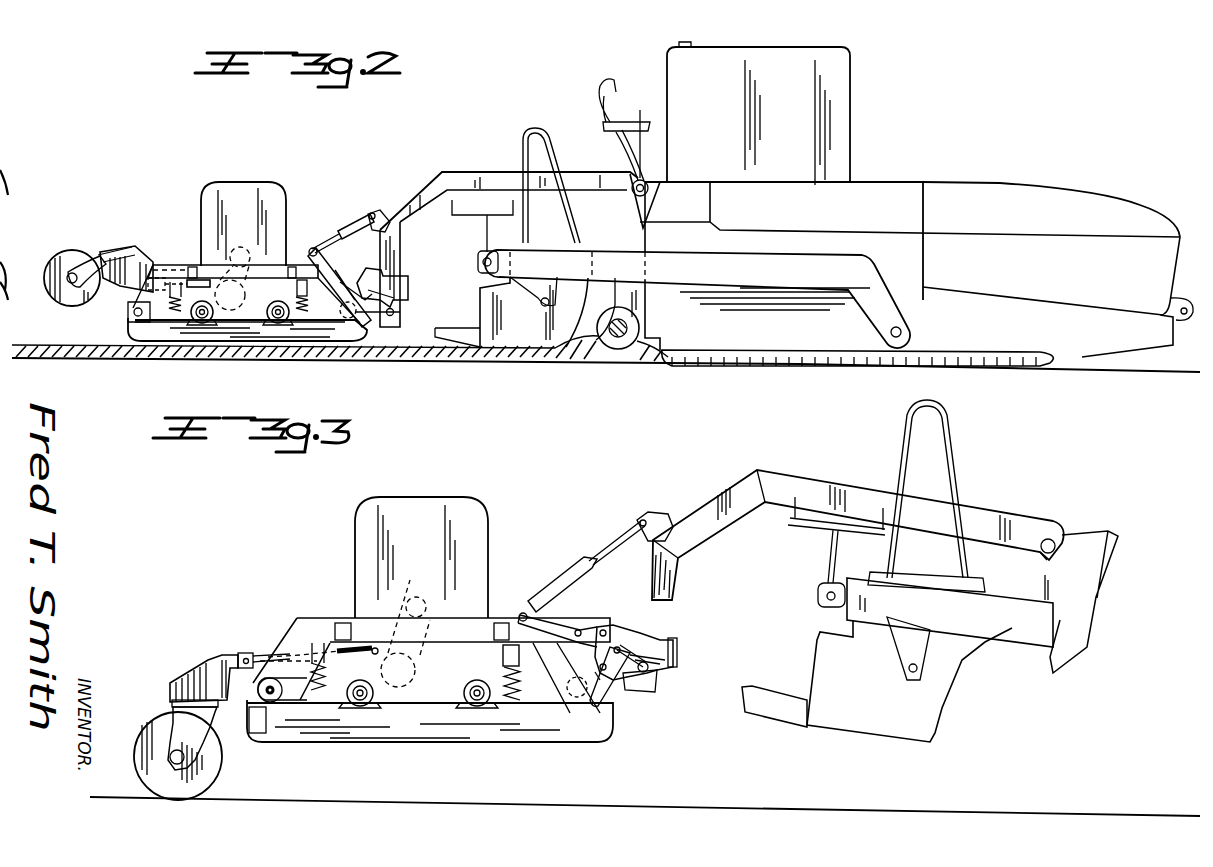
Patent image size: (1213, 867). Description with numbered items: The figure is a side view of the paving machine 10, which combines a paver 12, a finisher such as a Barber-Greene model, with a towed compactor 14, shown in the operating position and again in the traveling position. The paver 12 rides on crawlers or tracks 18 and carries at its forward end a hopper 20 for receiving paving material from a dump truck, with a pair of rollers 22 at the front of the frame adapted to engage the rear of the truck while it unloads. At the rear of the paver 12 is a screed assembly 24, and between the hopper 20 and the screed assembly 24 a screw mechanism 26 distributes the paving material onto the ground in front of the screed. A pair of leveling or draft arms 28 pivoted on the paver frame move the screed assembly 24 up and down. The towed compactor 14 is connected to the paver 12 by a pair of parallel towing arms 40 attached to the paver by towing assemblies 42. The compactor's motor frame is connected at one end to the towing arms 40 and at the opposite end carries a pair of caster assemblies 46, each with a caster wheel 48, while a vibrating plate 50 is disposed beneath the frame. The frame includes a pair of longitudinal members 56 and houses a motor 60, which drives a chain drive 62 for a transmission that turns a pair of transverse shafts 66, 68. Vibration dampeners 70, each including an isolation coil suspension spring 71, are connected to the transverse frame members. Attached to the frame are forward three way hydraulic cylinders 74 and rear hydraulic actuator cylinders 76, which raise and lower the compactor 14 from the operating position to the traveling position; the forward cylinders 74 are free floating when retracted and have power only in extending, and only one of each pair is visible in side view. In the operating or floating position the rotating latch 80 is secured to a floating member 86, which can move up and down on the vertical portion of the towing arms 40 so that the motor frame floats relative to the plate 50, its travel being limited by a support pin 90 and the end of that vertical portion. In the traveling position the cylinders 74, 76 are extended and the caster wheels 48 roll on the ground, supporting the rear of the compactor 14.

In FIG. 2, the paving machine 10 is at (494, 121).
In FIG. 2, the paver 12 is at (897, 176).
In FIG. 2, the towed compactor 14 is at (252, 179).
In FIG. 2, the tracks 18 is at (782, 366).
In FIG. 2, the hopper 20 is at (1016, 193).
In FIG. 2, the rollers 22 is at (1174, 299).
In FIG. 2, the screed assembly 24 is at (535, 334).
In FIG. 3, the screed assembly 24 is at (780, 658).
In FIG. 2, the screw mechanism 26 is at (613, 348).
In FIG. 2, the leveling or draft arms 28 is at (735, 282).
In FIG. 3, the leveling or draft arms 28 is at (1033, 636).
In FIG. 2, the towing arms 40 is at (476, 180).
In FIG. 3, the towing arms 40 is at (717, 491).
In FIG. 2, the towing assemblies 42 is at (652, 190).
In FIG. 2, the caster assemblies 46 is at (126, 262).
In FIG. 3, the caster assemblies 46 is at (235, 660).
In FIG. 2, the caster wheel 48 is at (78, 252).
In FIG. 3, the caster wheel 48 is at (157, 722).
In FIG. 2, the vibrating plate 50 is at (237, 337).
In FIG. 2, the longitudinal members 56 is at (268, 267).
In FIG. 3, the longitudinal members 56 is at (430, 630).
In FIG. 2, the motor 60 is at (268, 195).
In FIG. 3, the motor 60 is at (470, 514).
In FIG. 2, the chain drive 62 is at (230, 262).
In FIG. 3, the chain drive 62 is at (426, 588).
In FIG. 2, the transverse shaft 66 is at (200, 323).
In FIG. 3, the transverse shaft 66 is at (360, 706).
In FIG. 2, the transverse shaft 68 is at (277, 323).
In FIG. 3, the transverse shaft 68 is at (472, 684).
In FIG. 3, the vibration dampeners 70 is at (508, 652).
In FIG. 2, the isolation coil suspension spring 71 is at (299, 292).
In FIG. 3, the isolation coil suspension spring 71 is at (510, 703).
In FIG. 2, the forward three way hydraulic cylinders 74 is at (342, 230).
In FIG. 3, the forward three way hydraulic cylinders 74 is at (558, 585).
In FIG. 2, the rear hydraulic actuator cylinders 76 is at (198, 282).
In FIG. 3, the rotating latch 80 is at (608, 690).
In FIG. 2, the floating member 86 is at (400, 286).
In FIG. 3, the floating member 86 is at (656, 645).
In FIG. 2, the support pin 90 is at (398, 313).
In FIG. 3, the support pin 90 is at (655, 657).